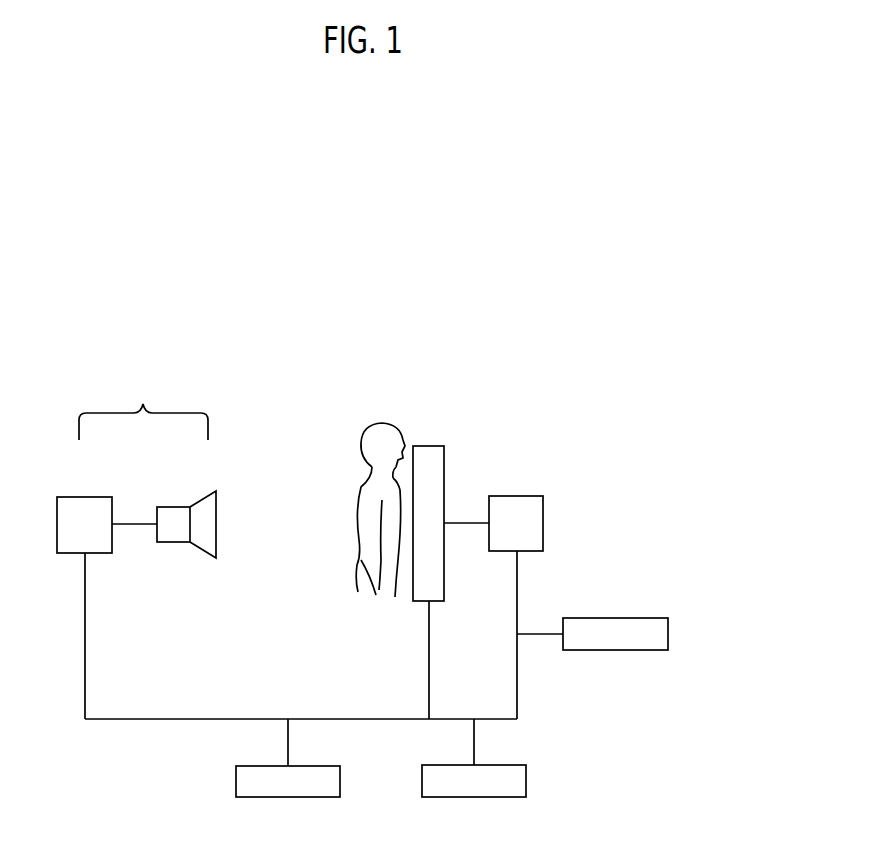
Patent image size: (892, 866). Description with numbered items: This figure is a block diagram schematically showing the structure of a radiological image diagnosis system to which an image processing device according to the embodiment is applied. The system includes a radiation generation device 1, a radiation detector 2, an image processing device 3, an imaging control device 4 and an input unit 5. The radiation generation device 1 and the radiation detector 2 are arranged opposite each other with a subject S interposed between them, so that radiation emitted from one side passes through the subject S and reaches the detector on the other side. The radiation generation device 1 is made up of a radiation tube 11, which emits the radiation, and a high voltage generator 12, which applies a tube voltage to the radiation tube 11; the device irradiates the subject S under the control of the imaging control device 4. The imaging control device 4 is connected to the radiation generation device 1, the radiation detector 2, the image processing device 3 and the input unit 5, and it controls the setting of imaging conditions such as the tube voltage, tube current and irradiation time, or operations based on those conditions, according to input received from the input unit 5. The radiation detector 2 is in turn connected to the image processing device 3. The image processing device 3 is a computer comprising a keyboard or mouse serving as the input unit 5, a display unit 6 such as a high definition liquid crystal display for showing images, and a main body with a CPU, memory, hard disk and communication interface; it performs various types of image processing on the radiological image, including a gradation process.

The radiation generation device 1 is at (143, 405).
The radiation detector 2 is at (428, 446).
The image processing device 3 is at (518, 496).
The imaging control device 4 is at (236, 782).
The input unit 5 is at (526, 780).
The display unit 6 is at (668, 634).
The radiation tube 11 is at (175, 507).
The high voltage generator 12 is at (85, 497).
The subject S is at (380, 423).